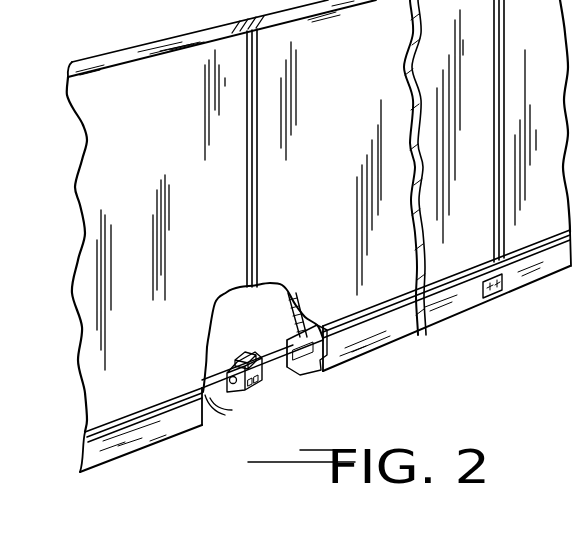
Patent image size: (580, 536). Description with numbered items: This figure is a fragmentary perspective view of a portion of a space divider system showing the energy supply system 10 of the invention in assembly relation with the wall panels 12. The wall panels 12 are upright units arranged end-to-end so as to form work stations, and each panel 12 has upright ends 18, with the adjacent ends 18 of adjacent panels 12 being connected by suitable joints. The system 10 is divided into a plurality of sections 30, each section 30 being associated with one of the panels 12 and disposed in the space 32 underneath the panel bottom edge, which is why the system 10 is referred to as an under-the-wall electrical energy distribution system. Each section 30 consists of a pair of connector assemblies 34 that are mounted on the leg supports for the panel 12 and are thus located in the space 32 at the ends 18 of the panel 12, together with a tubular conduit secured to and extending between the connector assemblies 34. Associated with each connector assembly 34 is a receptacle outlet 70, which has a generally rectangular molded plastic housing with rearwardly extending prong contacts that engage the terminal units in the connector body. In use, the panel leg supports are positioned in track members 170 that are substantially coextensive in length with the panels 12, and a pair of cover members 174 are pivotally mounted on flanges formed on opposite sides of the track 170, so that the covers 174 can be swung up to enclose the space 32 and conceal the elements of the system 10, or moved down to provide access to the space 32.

The energy supply system 10 is at (221, 409).
The wall panel 12 is at (153, 176).
The upright end 18 is at (247, 207).
The section 30 is at (219, 358).
The space 32 is at (300, 335).
The connector assembly 34 is at (218, 402).
The receptacle outlet 70 is at (257, 383).
The track member 170 is at (303, 372).
The cover member 174 is at (398, 328).